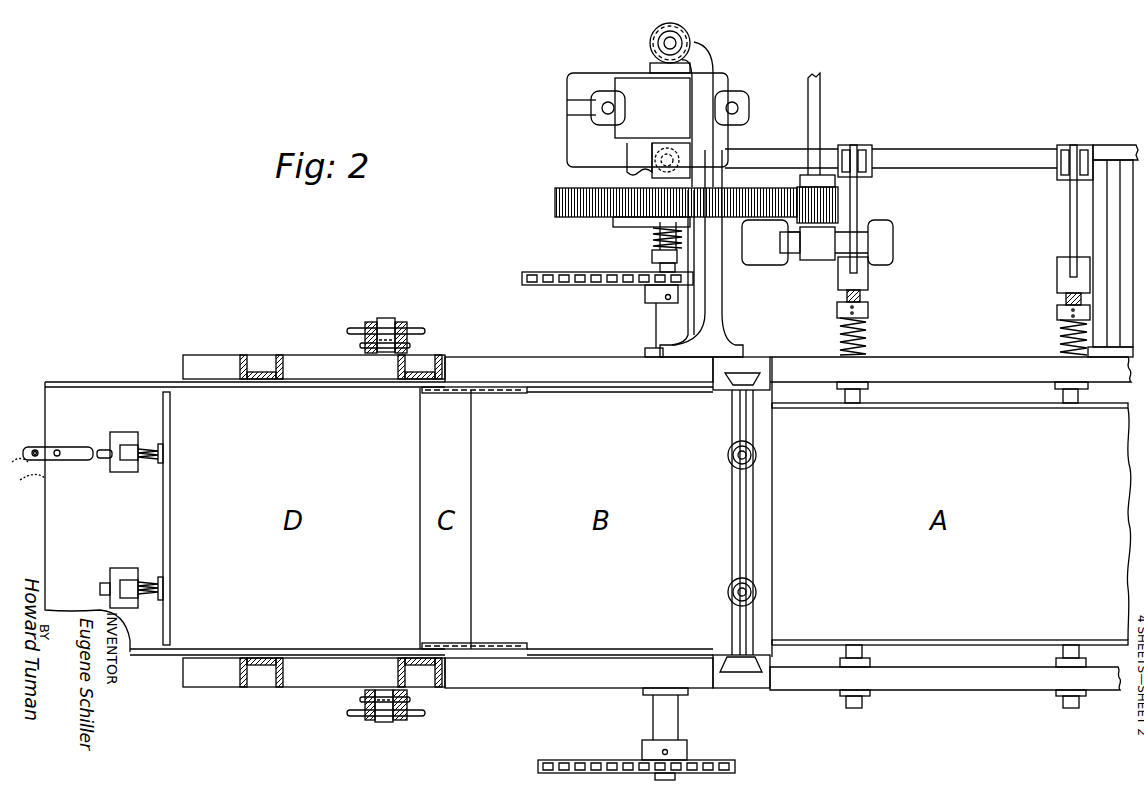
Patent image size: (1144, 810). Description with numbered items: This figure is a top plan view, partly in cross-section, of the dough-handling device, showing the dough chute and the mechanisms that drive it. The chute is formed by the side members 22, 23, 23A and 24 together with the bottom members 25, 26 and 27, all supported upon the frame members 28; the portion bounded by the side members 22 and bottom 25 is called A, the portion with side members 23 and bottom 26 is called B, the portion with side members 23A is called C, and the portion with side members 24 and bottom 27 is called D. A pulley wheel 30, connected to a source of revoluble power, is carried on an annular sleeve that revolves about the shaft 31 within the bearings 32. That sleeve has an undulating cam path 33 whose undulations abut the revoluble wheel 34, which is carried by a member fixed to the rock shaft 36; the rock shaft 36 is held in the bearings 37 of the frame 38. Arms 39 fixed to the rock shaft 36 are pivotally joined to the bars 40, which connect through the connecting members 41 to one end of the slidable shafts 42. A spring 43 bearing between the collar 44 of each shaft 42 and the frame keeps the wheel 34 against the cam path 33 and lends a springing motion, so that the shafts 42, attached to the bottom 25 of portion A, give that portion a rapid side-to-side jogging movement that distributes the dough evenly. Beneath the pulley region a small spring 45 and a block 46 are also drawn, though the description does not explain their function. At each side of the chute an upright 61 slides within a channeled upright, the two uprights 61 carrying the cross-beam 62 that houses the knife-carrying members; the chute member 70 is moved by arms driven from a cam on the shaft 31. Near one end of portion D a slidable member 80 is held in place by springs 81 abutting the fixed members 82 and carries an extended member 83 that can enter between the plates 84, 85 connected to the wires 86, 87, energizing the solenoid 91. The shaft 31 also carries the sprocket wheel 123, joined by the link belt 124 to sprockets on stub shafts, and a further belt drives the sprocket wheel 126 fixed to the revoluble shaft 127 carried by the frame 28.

The side members 22 is at (958, 409).
The side members 23 is at (600, 393).
The side members 23A is at (478, 393).
The side members 24 is at (315, 388).
The bottom member 25 is at (1000, 630).
The bottom member 26 is at (548, 632).
The bottom member 27 is at (335, 638).
The frame members 28 is at (237, 355).
The pulley wheel 30 is at (555, 203).
The shaft 31 is at (655, 320).
The bearings 32 is at (648, 352).
The undulating cam path 33 is at (640, 170).
The revoluble wheel 34 is at (640, 158).
The rock shaft 36 is at (938, 150).
The bearings 37 is at (730, 148).
The frame 38 is at (722, 258).
The arms 39 is at (862, 146).
The bars 40 is at (858, 205).
The connecting members 41 is at (869, 283).
The shafts 42 is at (862, 400).
The spring 43 is at (868, 335).
The collar 44 is at (869, 310).
The spring 45 is at (653, 241).
The block 46 is at (652, 258).
The upright 61 is at (755, 375).
The cross-beam 62 is at (734, 500).
The chute member 70 is at (473, 482).
The slidable member 80 is at (172, 483).
The springs 81 is at (147, 463).
The fixed members 82 is at (120, 472).
The extended member 83 is at (101, 450).
The plate 84 is at (42, 447).
The plate 85 is at (73, 447).
The wire 86 is at (20, 458).
The wire 87 is at (40, 474).
The solenoid 91 is at (690, 35).
The sprocket wheel 123 is at (645, 296).
The link belt 124 is at (545, 285).
The sprocket wheel 126 is at (362, 326).
The revoluble shaft 127 is at (390, 318).